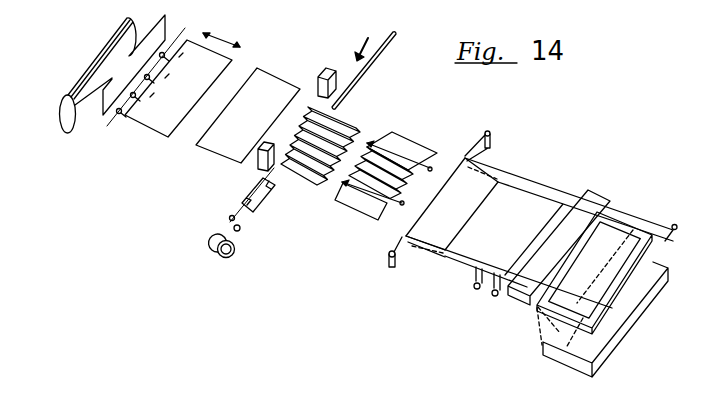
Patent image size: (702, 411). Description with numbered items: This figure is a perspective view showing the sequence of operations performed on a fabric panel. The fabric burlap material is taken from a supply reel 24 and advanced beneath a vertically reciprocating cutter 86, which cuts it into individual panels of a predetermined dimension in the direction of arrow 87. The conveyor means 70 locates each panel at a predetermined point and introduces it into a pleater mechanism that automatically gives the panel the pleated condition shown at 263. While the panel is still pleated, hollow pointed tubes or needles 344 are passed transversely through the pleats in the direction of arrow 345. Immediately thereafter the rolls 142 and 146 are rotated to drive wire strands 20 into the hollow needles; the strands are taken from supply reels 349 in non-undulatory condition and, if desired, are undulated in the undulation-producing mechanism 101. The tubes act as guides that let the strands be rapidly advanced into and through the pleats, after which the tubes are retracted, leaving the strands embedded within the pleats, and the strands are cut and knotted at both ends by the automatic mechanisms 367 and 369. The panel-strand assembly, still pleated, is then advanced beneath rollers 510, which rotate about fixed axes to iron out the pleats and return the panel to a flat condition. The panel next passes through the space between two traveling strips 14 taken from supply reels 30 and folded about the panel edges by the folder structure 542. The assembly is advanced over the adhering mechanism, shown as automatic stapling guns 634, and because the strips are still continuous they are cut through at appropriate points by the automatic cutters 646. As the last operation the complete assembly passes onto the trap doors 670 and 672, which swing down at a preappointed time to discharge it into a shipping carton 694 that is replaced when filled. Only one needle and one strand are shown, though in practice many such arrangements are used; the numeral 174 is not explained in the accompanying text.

The traveling strips 14 is at (515, 182).
The wire strands 20 is at (268, 200).
The supply reel 24 is at (73, 131).
The supply reels 30 is at (493, 137).
The conveyor means 70 is at (132, 115).
The vertically reciprocating cutter 86 is at (104, 63).
The arrow 87 is at (235, 44).
The undulation-producing mechanism 101 is at (248, 190).
The roll 142 is at (229, 217).
The roll 146 is at (241, 231).
The reference 174 is at (15, 12).
The pleated condition 263 is at (355, 127).
The hollow pointed tubes or needles 344 is at (362, 73).
The arrow 345 is at (367, 36).
The supply reels 349 is at (213, 249).
The automatic mechanism 367 is at (258, 158).
The automatic mechanism 369 is at (327, 66).
The rollers 510 is at (402, 152).
The folder structure 542 is at (483, 165).
The automatic stapling guns 634 is at (493, 291).
The automatic cutters 646 is at (600, 195).
The trap door 670 is at (553, 303).
The trap door 672 is at (610, 298).
The shipping carton 694 is at (543, 352).